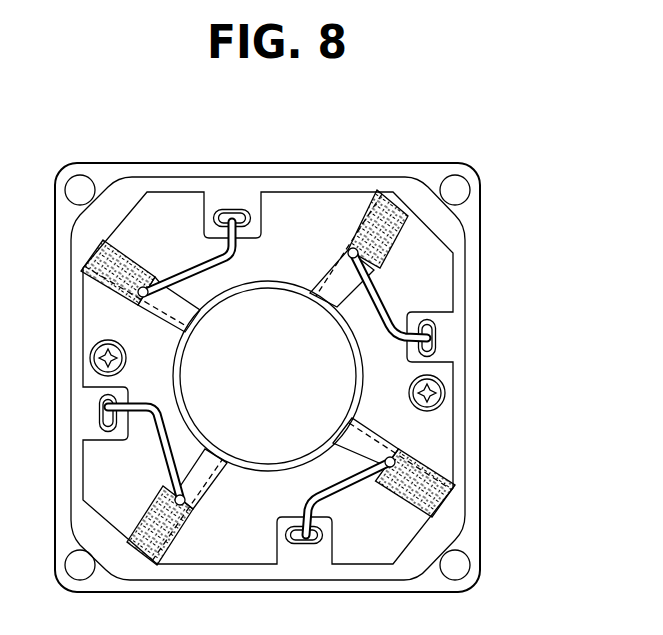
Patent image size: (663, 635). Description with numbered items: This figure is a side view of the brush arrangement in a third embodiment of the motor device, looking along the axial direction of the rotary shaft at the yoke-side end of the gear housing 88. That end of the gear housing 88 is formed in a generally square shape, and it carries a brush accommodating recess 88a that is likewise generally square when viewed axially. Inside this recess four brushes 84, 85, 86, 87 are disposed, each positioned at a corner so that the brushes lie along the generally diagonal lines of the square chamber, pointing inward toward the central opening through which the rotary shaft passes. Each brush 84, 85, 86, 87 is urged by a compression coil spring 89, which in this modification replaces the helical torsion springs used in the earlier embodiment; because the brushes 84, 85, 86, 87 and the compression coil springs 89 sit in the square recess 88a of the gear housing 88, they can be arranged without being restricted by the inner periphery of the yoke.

The gear housing 88 is at (482, 232).
The brush accommodating recess 88a is at (350, 178).
The compression coil springs 89 is at (130, 248).
The brush 84 is at (314, 305).
The brush 85 is at (213, 447).
The brush 86 is at (196, 325).
The brush 87 is at (340, 423).